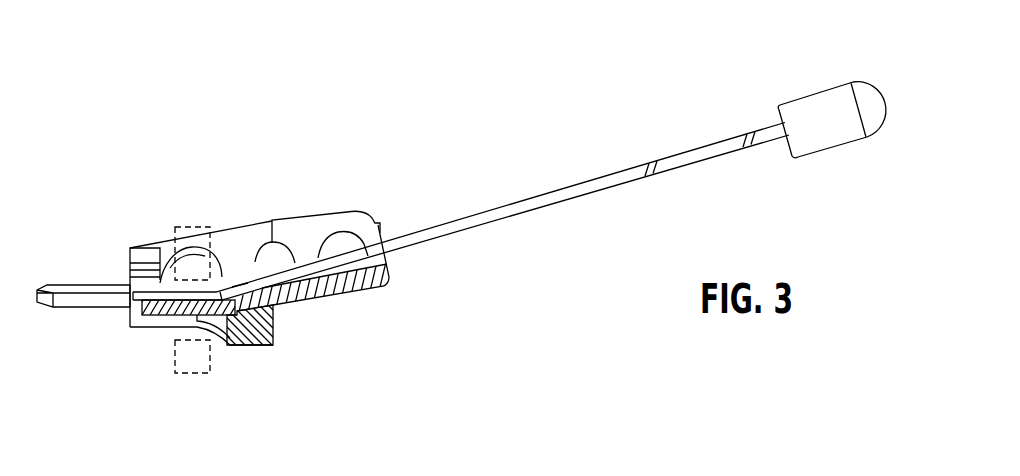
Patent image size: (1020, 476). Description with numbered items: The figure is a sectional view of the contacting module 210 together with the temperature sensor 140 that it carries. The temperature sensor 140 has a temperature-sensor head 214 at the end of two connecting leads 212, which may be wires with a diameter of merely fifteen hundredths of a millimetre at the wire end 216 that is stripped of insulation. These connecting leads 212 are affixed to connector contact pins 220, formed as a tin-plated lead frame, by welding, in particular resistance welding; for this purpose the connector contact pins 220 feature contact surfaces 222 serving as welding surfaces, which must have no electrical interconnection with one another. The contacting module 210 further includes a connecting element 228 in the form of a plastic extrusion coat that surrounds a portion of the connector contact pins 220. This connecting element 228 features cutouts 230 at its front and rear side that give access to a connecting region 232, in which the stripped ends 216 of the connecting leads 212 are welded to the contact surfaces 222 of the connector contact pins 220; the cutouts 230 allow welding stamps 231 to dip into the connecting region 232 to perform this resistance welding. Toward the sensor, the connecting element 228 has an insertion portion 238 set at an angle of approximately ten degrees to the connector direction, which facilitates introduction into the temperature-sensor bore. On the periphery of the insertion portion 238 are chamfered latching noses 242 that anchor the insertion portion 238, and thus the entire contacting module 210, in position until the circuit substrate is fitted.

The temperature sensor 140 is at (713, 93).
The contacting module 210 is at (305, 325).
The connecting leads 212 is at (520, 213).
The temperature-sensor head 214 is at (820, 103).
The wire end 216 is at (240, 275).
The connector contact pins 220 is at (175, 305).
The contact surfaces 222 is at (140, 283).
The connecting element 228 is at (323, 213).
The cutouts 230 is at (187, 227).
The welding stamps 231 is at (176, 228).
The connecting region 232 is at (167, 275).
The insertion portion 238 is at (357, 210).
The latching noses 242 is at (337, 212).